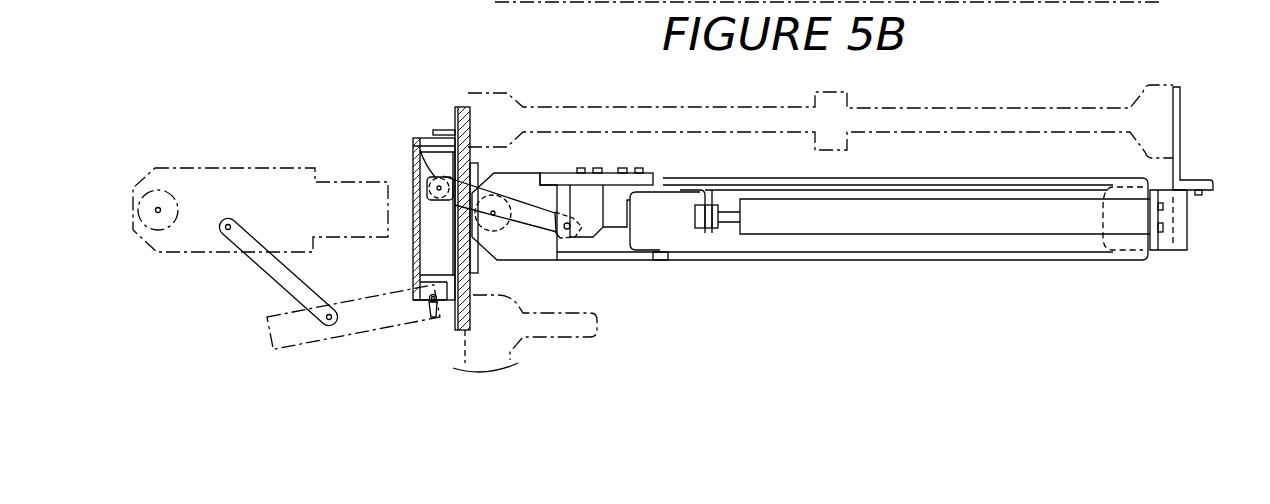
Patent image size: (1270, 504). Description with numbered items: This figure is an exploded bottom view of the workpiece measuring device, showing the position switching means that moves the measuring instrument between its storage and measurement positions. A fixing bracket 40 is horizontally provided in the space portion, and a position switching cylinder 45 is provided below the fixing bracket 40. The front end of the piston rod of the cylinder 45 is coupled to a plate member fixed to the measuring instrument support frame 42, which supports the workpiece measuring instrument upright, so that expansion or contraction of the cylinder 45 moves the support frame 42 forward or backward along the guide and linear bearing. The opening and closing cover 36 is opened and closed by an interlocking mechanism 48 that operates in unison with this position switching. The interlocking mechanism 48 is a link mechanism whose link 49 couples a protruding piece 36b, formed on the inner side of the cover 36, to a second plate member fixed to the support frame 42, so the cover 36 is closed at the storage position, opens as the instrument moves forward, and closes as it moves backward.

The opening and closing cover 36 is at (413, 160).
The protruding piece 36b is at (413, 138).
The measuring instrument support frame 42 is at (532, 185).
The position switching cylinder 45 is at (908, 215).
The interlocking mechanism 48 is at (508, 237).
The link 49 is at (528, 208).
The fixing bracket 40 is at (1015, 260).